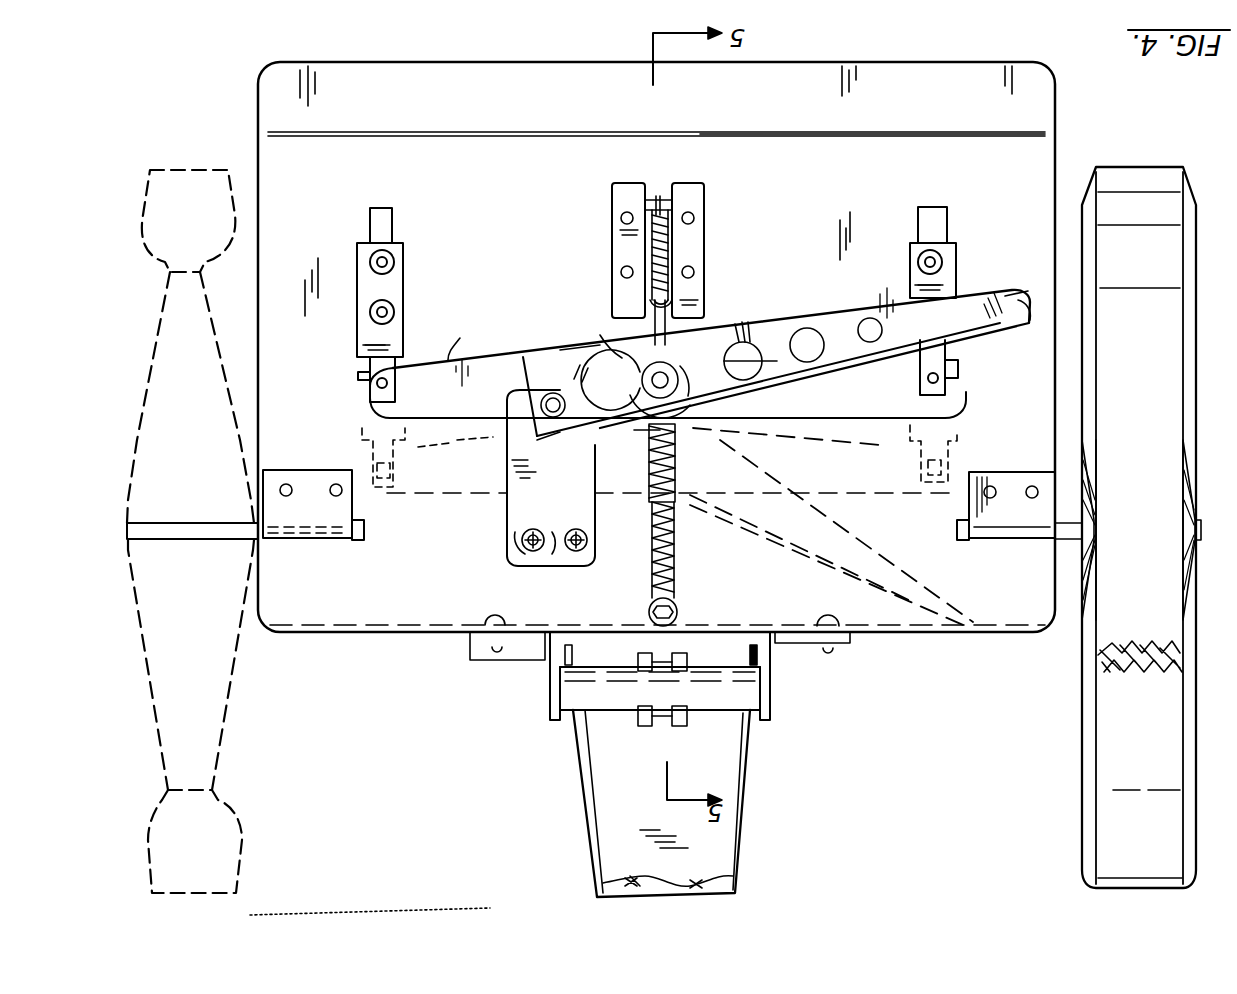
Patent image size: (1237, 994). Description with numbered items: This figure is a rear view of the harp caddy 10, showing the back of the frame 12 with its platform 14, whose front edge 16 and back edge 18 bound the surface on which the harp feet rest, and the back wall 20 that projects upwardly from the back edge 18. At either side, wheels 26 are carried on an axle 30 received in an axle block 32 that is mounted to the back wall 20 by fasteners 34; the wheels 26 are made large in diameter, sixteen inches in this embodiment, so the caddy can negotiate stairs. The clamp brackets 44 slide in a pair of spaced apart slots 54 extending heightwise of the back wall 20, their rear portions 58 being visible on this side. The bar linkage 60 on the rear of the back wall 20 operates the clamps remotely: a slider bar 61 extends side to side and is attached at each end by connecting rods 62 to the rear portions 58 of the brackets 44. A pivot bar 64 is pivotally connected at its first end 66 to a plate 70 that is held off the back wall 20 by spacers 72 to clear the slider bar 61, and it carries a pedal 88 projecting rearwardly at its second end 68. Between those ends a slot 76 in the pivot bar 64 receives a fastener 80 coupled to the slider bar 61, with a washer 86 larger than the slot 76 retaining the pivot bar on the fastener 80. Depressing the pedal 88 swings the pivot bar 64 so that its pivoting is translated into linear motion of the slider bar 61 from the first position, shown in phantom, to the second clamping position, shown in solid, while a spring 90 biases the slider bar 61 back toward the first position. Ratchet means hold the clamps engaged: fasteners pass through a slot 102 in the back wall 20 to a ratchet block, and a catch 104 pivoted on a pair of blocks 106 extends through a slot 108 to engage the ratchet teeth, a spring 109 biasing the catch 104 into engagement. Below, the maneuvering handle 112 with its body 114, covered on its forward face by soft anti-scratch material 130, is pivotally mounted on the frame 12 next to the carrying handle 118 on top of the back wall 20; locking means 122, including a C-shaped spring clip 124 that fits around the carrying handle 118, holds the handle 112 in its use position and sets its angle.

The harp caddy 10 is at (384, 763).
The frame 12 is at (657, 658).
The platform 14 is at (627, 347).
The front edge 16 is at (656, 81).
The back edge 18 is at (872, 155).
The back wall 20 is at (604, 653).
The wheels 26 is at (661, 530).
The axle 30 is at (664, 530).
The axle block 32 is at (659, 532).
The fasteners 34 is at (659, 464).
The brackets 44 is at (682, 352).
The slots 54 is at (658, 215).
The rear portions 58 is at (626, 303).
The bar linkage 60 is at (564, 313).
The slider bar 61 is at (471, 353).
The connecting rods 62 is at (663, 355).
The pivot bar 64 is at (711, 453).
The first end 66 is at (547, 378).
The second end 68 is at (1021, 274).
The plate 70 is at (524, 478).
The spacers 72 is at (551, 567).
The slot 76 is at (598, 321).
The fastener 80 is at (729, 313).
The washer 86 is at (635, 402).
The pedal 88 is at (963, 487).
The spring 90 is at (633, 606).
The slot 102 is at (698, 511).
The catch 104 is at (708, 300).
The blocks 106 is at (665, 250).
The slot 108 is at (705, 191).
The spring 109 is at (610, 248).
The maneuvering handle 112 is at (619, 803).
The body 114 is at (606, 831).
The carrying handle 118 is at (632, 696).
The locking and adjusting means 122 is at (618, 761).
The C-shaped spring clip 124 is at (683, 708).
The anti-scratch material 130 is at (629, 885).